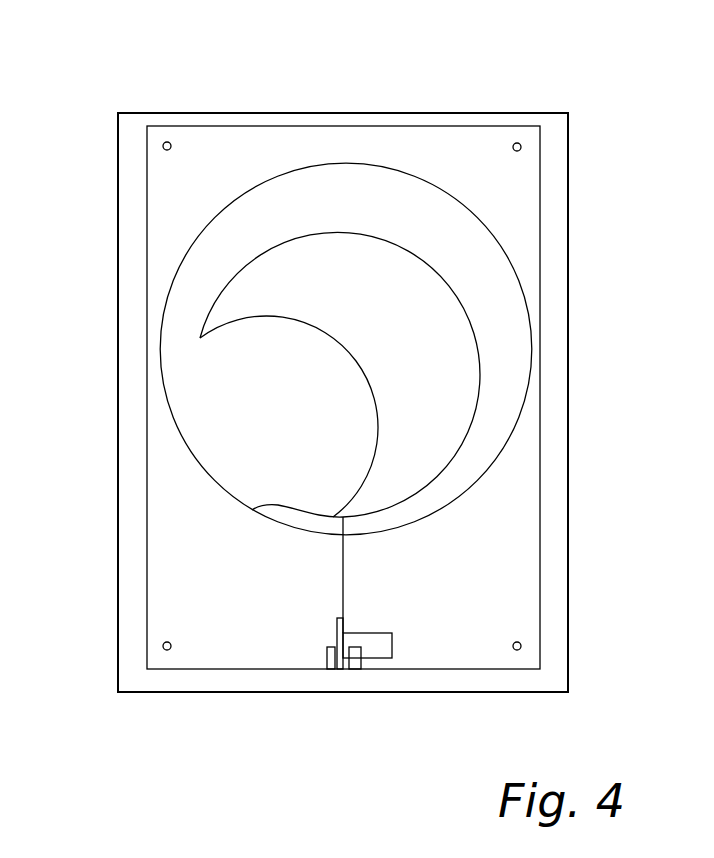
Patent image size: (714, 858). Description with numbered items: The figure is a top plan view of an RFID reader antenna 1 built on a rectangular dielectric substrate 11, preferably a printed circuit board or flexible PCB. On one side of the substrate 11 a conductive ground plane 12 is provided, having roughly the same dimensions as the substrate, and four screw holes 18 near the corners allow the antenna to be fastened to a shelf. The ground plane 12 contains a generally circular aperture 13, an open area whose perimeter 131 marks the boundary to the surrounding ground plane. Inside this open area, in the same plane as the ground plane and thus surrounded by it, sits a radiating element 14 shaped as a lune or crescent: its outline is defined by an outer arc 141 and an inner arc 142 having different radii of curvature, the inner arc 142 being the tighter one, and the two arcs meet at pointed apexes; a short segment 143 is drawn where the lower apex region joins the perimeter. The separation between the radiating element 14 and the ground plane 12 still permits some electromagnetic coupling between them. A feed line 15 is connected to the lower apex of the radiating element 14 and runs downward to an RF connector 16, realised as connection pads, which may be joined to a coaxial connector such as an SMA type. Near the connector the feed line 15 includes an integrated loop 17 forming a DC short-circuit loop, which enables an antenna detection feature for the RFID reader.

The antenna 1 is at (138, 53).
The dielectric substrate 11 is at (130, 208).
The ground plane 12 is at (162, 240).
The aperture 13 is at (284, 349).
The perimeter 131 is at (160, 367).
The radiating element 14 is at (410, 404).
The outer arc 141 is at (402, 503).
The inner arc 142 is at (320, 337).
The connecting segment 143 is at (260, 505).
The feed line 15 is at (343, 578).
The RF connector 16 is at (333, 660).
The integrated loop 17 is at (392, 647).
The screw holes 18 is at (162, 145).